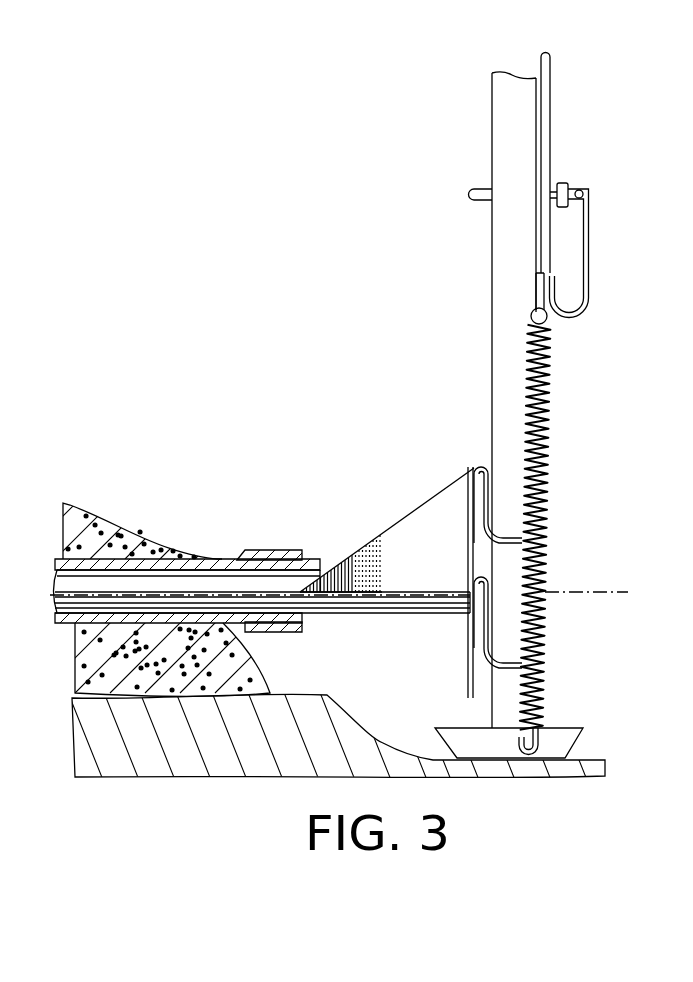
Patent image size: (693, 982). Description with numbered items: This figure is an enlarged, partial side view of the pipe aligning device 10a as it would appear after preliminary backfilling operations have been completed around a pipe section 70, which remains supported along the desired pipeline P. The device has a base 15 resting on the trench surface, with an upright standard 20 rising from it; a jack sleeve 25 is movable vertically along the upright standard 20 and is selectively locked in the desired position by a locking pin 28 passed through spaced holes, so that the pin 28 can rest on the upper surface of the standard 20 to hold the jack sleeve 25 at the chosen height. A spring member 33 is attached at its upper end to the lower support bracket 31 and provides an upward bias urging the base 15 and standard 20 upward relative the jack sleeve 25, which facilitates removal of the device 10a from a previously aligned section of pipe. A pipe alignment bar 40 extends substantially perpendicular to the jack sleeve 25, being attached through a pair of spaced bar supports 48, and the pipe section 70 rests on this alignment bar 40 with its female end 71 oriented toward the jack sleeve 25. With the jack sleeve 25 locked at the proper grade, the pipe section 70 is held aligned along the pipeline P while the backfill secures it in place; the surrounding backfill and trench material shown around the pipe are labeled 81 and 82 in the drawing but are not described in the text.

The pipe aligning device 10a is at (367, 412).
The base 15 is at (463, 722).
The upright standard 20 is at (500, 690).
The jack sleeve 25 is at (498, 372).
The locking pin 28 is at (466, 190).
The lower support bracket 31 is at (537, 292).
The spring member 33 is at (550, 434).
The pipe alignment bar 40 is at (318, 560).
The bar supports 48 is at (431, 520).
The pipe section 70 is at (216, 558).
The female end 71 is at (276, 552).
The floor 81 is at (320, 696).
The wall 82 is at (143, 548).
The pipeline P is at (568, 592).